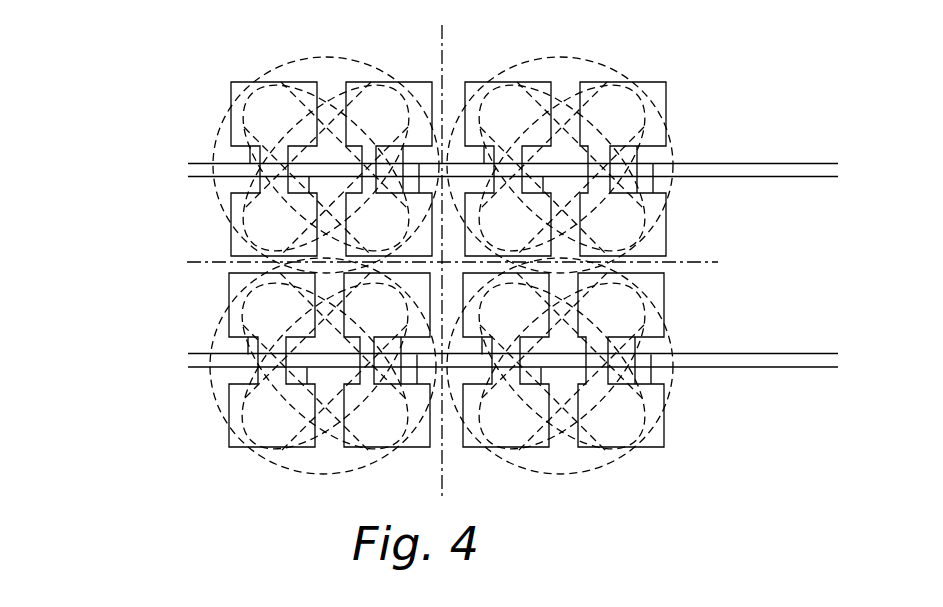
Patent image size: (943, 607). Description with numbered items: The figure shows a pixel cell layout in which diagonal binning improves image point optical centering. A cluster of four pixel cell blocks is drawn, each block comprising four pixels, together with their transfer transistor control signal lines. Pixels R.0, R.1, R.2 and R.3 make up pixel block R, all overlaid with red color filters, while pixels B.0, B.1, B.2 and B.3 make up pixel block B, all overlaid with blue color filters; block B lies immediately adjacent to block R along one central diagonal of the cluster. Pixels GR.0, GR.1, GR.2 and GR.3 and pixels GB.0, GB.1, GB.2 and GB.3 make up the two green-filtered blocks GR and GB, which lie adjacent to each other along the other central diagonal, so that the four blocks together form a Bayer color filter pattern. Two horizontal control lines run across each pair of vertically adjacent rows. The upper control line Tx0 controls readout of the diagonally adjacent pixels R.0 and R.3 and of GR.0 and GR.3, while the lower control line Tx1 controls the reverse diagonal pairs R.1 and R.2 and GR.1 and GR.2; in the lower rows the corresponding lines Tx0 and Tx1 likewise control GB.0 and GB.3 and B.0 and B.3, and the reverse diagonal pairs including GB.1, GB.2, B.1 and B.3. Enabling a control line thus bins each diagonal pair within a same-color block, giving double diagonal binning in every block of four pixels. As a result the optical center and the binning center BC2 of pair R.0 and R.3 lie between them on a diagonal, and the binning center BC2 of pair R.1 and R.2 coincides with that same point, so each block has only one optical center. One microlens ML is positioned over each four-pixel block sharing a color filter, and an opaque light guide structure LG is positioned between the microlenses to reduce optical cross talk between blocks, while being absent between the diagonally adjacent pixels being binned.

The binning center BC2 is at (316, 172).
The light guide structure LG is at (432, 38).
The microlens ML is at (202, 330).
The transfer transistor control line Tx0 is at (513, 246).
The transfer transistor control line Tx1 is at (513, 294).
The pixel R.0 is at (274, 169).
The pixel R.1 is at (274, 226).
The pixel R.2 is at (389, 169).
The pixel R.3 is at (389, 226).
The pixel GR.0 is at (508, 169).
The pixel GR.1 is at (508, 226).
The pixel GR.2 is at (623, 169).
The pixel GR.3 is at (622, 226).
The pixel GB.0 is at (272, 360).
The pixel GB.1 is at (272, 416).
The pixel GB.2 is at (387, 360).
The pixel GB.3 is at (387, 416).
The pixel B.0 is at (506, 360).
The pixel B.1 is at (506, 416).
The pixel B.2 is at (621, 360).
The pixel B.3 is at (620, 416).